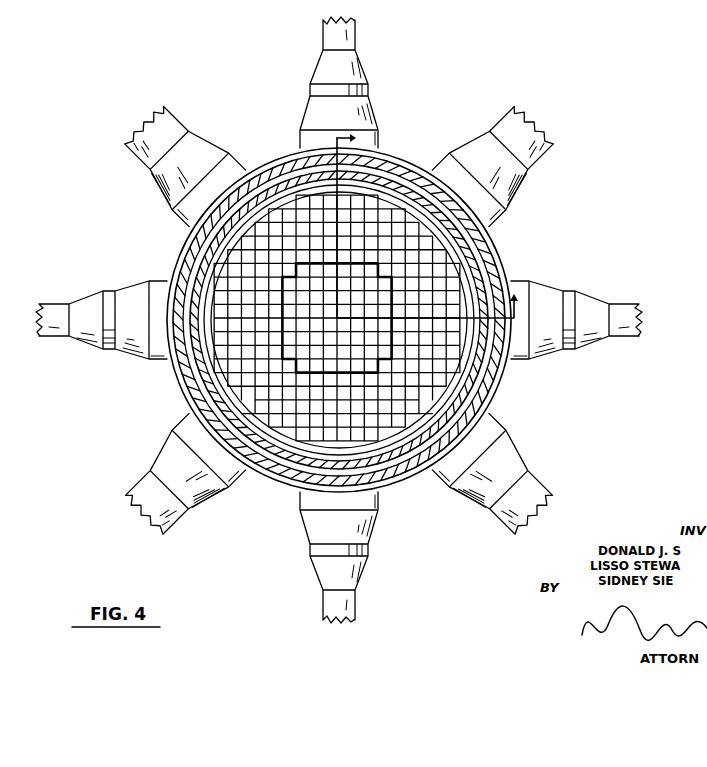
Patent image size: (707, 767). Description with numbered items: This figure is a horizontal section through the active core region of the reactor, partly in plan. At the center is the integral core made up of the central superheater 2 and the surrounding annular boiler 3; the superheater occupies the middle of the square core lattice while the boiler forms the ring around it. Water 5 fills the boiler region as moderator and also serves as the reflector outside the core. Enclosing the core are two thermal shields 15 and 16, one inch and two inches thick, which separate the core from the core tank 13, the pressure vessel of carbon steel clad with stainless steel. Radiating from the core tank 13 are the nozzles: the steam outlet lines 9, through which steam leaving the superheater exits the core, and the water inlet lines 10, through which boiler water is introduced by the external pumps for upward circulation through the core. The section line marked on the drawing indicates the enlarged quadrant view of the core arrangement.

The superheater 2 is at (307, 320).
The boiler 3 is at (196, 406).
The water 5 is at (428, 221).
The steam outlet lines 9 is at (330, 40).
The inlet line 10 is at (501, 128).
The core tank 13 is at (497, 238).
The thermal shield 15 is at (503, 372).
The thermal shield 16 is at (493, 383).